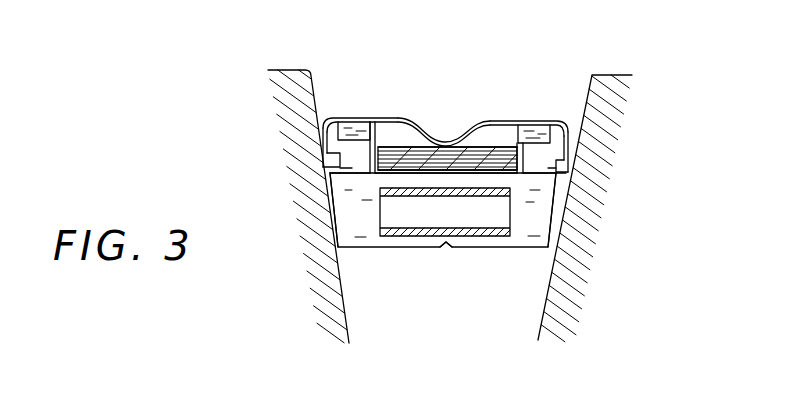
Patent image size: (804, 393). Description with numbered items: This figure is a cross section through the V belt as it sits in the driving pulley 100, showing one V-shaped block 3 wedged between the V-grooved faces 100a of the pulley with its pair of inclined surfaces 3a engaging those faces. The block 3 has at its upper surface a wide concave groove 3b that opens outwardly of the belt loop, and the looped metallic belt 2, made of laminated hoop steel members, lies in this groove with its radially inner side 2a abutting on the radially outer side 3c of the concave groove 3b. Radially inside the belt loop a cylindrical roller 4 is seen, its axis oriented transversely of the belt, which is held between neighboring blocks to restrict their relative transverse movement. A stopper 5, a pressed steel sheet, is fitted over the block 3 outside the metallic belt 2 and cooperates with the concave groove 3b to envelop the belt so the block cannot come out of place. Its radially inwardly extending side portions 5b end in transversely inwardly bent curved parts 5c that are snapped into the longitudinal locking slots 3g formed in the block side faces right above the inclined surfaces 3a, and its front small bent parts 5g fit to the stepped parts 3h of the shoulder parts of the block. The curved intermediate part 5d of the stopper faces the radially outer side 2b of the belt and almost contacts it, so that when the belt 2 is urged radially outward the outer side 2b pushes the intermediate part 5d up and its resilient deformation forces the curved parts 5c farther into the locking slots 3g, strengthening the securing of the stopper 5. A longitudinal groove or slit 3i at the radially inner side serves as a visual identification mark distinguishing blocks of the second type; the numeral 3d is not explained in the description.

The driving pulley 100 is at (606, 64).
The V-grooved face 100a is at (320, 82).
The metallic belt 2 is at (398, 134).
The radially inner side 2a is at (468, 178).
The radially outer side 2b is at (488, 145).
The V-shaped block 3 is at (386, 262).
The inclined surface 3a is at (332, 222).
The concave groove 3b is at (374, 149).
The radially outer side of the concave groove 3c is at (430, 176).
The housing shoulder 3d is at (521, 180).
The locking slot 3g is at (346, 180).
The stepped part 3h is at (322, 128).
The longitudinal groove or slit 3i is at (446, 249).
The cylindrical roller 4 is at (492, 251).
The stopper 5 is at (507, 103).
The side portion 5b is at (322, 148).
The curved part 5c is at (335, 180).
The intermediate part 5d is at (449, 163).
The front bent part 5g is at (352, 125).